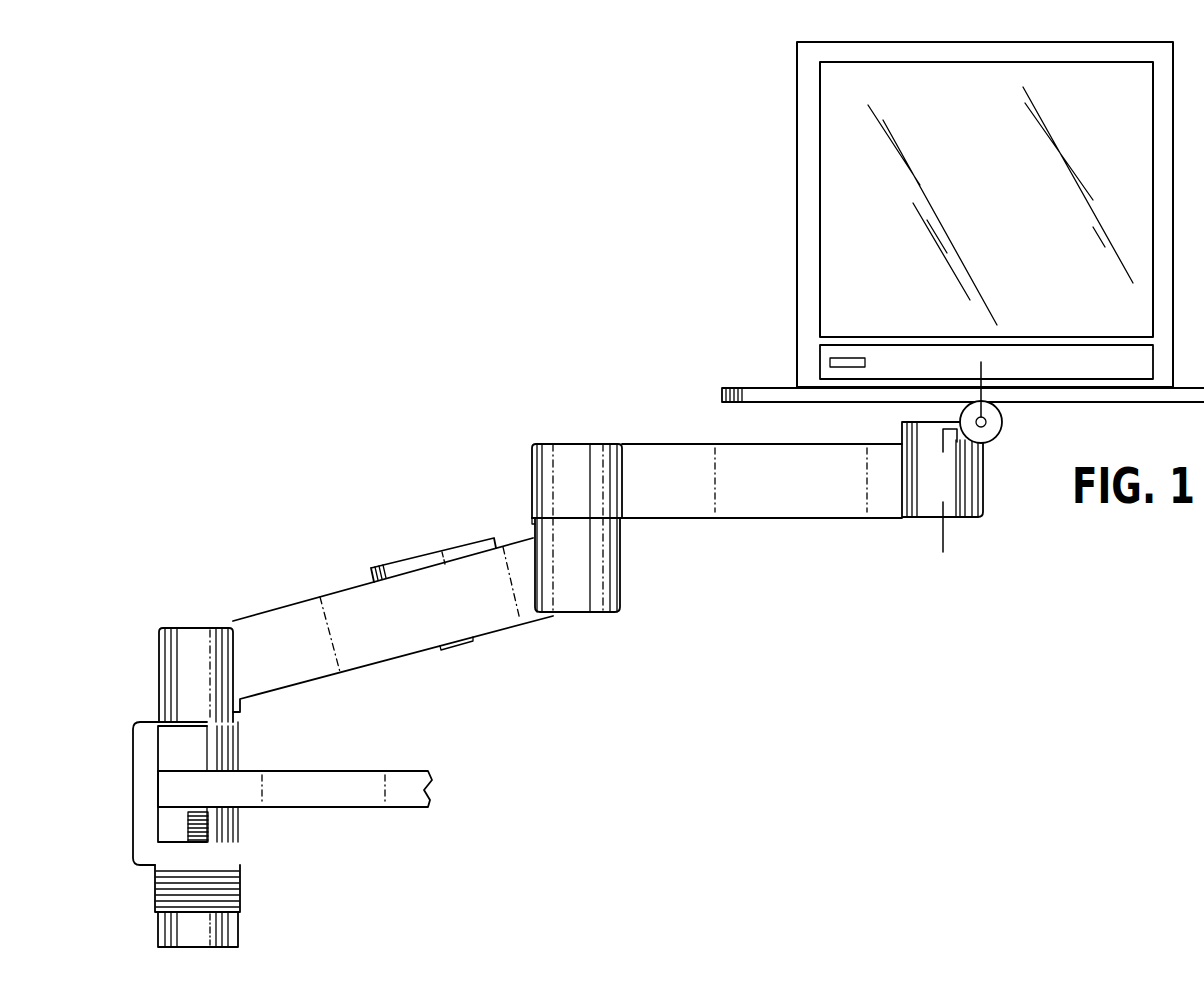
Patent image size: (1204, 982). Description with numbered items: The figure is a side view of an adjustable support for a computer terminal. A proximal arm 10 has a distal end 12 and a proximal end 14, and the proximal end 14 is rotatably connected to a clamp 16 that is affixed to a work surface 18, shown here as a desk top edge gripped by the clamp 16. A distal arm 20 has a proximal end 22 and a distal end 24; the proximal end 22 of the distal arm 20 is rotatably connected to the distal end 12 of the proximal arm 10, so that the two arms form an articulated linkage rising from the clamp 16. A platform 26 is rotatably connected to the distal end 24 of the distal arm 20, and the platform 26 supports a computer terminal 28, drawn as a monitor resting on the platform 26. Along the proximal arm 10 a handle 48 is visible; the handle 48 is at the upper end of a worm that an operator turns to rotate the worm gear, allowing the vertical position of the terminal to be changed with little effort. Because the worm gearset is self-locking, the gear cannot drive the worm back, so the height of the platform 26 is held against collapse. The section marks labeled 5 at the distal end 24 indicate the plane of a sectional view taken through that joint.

The proximal arm 10 is at (418, 652).
The distal end of proximal arm 12 is at (620, 594).
The proximal end of proximal arm 14 is at (158, 688).
The clamp 16 is at (133, 772).
The work surface 18 is at (385, 771).
The distal arm 20 is at (770, 518).
The proximal end of distal arm 22 is at (532, 502).
The distal end of distal arm 24 is at (985, 461).
The platform 26 is at (766, 388).
The computer terminal 28 is at (795, 220).
The handle 48 is at (400, 562).
The section line 5- 5 is at (940, 368).